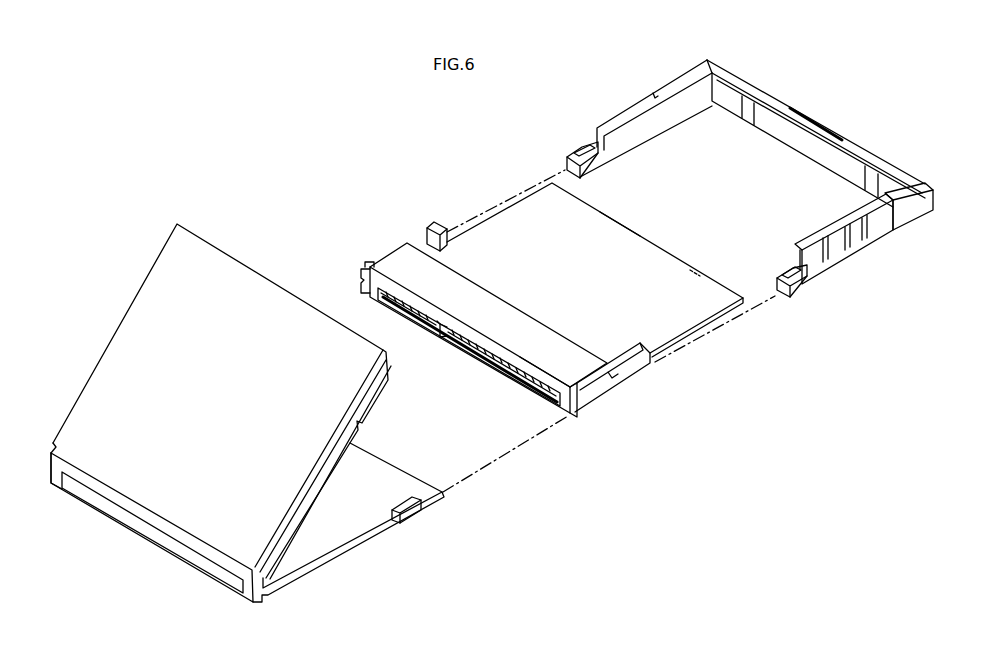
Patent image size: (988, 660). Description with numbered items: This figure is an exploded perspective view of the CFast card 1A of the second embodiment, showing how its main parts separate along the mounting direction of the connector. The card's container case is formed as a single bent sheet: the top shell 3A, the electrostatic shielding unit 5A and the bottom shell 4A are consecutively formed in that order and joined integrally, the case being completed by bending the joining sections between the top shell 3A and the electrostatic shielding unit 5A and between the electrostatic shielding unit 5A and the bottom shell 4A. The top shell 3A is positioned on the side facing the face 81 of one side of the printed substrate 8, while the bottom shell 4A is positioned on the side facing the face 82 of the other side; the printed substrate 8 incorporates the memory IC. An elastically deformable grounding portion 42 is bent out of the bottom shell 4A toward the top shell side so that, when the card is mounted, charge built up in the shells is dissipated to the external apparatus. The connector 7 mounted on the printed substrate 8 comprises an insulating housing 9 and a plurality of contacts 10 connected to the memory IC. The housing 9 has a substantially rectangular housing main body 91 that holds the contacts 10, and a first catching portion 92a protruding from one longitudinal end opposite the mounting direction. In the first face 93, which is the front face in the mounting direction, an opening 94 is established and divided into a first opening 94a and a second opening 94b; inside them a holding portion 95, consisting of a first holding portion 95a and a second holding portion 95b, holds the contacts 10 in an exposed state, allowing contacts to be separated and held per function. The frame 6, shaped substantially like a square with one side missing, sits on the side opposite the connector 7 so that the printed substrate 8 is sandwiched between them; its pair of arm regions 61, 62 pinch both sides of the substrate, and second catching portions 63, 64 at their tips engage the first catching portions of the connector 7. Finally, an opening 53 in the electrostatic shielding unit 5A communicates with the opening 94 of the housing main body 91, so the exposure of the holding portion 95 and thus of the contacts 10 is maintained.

The CFast card 1A is at (270, 152).
The top shell 3A is at (137, 333).
The bottom shell 4A is at (347, 530).
The electrostatic shielding unit 5A is at (56, 478).
The opening 53 is at (187, 553).
The grounding portion 42 is at (412, 513).
The connector 7 is at (366, 263).
The housing 9 is at (383, 254).
The first face 93 is at (362, 279).
The opening 94 is at (499, 396).
The first opening 94a is at (517, 399).
The second opening 94b is at (383, 315).
The contacts 10 is at (405, 311).
The holding portion 95 is at (462, 386).
The first holding portion 95a is at (449, 342).
The second holding portion 95b is at (424, 329).
The housing main body 91 is at (552, 366).
The first catching portion 92a is at (640, 378).
The printed substrate 8 is at (673, 339).
The face of one side 81 is at (640, 253).
The face of another side 82 is at (698, 278).
The frame 6 is at (767, 93).
The arm region 61 is at (880, 230).
The arm region 62 is at (677, 115).
The second catching portion 63 is at (800, 288).
The second catching portion 64 is at (590, 163).